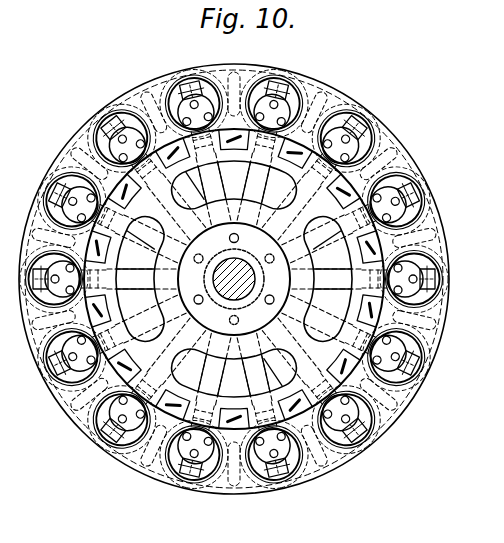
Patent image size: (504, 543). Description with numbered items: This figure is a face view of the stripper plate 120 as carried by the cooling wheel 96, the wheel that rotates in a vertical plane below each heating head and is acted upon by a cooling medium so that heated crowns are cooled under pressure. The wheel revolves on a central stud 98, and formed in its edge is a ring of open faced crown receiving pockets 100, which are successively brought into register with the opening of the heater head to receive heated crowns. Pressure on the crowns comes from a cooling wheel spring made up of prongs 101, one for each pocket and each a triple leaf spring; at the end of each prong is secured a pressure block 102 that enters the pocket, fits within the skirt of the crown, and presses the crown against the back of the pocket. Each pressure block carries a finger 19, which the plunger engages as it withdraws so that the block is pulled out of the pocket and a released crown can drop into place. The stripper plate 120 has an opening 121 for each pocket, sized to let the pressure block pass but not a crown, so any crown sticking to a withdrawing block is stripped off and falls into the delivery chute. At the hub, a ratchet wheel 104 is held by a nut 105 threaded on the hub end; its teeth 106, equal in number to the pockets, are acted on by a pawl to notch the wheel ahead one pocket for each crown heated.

The finger 19 is at (57, 178).
The cooling wheel 96 is at (339, 98).
The stud 98 is at (250, 288).
The crown receiving pocket 100 is at (150, 111).
The prong 101 is at (120, 143).
The pressure block 102 is at (57, 190).
The ratchet wheel 104 is at (248, 200).
The nut 105 is at (200, 305).
The teeth 106 is at (150, 184).
The stripper plate 120 is at (219, 69).
The opening 121 is at (56, 214).